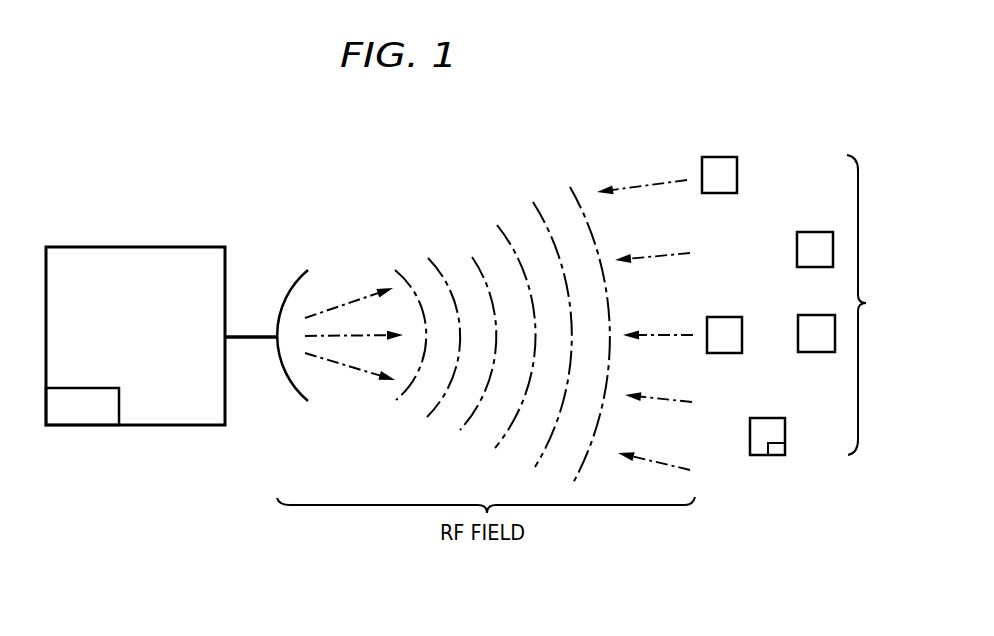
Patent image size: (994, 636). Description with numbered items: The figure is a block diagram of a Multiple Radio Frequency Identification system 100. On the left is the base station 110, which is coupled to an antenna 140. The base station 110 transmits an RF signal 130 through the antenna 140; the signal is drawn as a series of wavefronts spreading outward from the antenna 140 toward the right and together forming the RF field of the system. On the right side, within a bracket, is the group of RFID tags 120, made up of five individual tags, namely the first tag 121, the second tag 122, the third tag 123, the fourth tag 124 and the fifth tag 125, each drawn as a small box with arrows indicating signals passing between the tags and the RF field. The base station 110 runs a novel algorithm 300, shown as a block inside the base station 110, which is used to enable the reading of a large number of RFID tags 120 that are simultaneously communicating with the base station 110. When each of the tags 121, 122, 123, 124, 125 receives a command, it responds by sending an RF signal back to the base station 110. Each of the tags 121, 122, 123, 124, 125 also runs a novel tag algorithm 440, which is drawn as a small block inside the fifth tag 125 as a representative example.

The Multiple Radio Frequency Identification system 100 is at (338, 143).
The base station 110 is at (202, 410).
The algorithm 300 is at (82, 408).
The antenna 140 is at (305, 272).
The RF signal 130 is at (463, 245).
The RFID tags 120 is at (748, 312).
The RFID tag 121 is at (723, 157).
The RFID tag 122 is at (803, 232).
The RFID tag 123 is at (733, 353).
The RFID tag 124 is at (800, 317).
The RFID tag 125 is at (765, 463).
The tag algorithm 440 is at (777, 455).